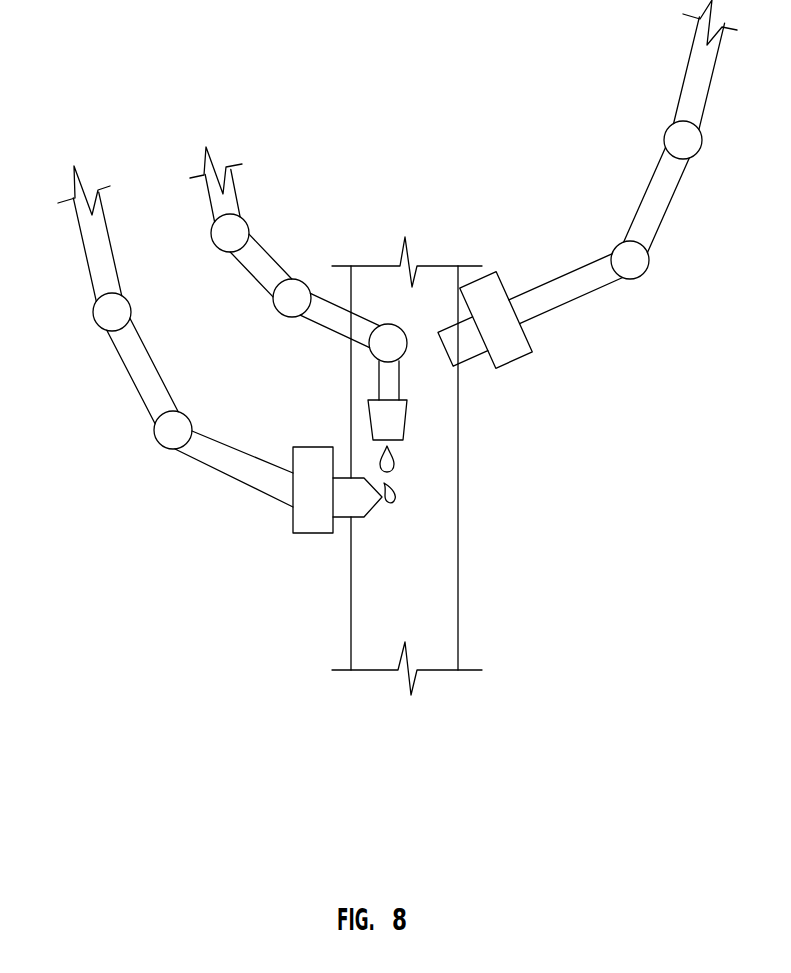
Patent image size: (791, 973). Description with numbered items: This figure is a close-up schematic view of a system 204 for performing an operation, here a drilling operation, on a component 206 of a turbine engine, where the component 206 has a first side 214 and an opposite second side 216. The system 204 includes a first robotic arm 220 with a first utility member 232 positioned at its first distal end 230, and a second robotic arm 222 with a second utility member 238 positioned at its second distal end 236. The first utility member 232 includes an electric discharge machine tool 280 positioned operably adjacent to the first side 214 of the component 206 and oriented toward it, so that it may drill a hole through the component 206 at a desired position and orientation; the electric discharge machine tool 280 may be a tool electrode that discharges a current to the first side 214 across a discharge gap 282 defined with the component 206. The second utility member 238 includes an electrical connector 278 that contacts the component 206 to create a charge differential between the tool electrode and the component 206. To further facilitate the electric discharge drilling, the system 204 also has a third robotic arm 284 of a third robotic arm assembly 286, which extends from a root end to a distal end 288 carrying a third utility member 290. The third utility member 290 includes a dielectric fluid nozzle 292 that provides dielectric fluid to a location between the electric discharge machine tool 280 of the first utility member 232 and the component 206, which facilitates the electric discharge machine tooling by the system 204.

The system 204 is at (350, 158).
The component 206 is at (435, 290).
The first side 214 is at (340, 605).
The second side 216 is at (472, 561).
The first robotic arm 220 is at (150, 466).
The second robotic arm 222 is at (636, 314).
The first distal end 230 is at (256, 513).
The first utility member 232 is at (303, 546).
The second distal end 236 is at (533, 263).
The second utility member 238 is at (536, 364).
The electrical connector 278 is at (467, 366).
The electric discharge machine tool 280 is at (348, 485).
The discharge gap 282 is at (392, 512).
The third robotic arm 284 is at (232, 301).
The third robotic arm assembly 286 is at (268, 165).
The distal end 288 is at (349, 376).
The third utility member 290 is at (432, 418).
The dielectric fluid nozzle 292 is at (395, 437).